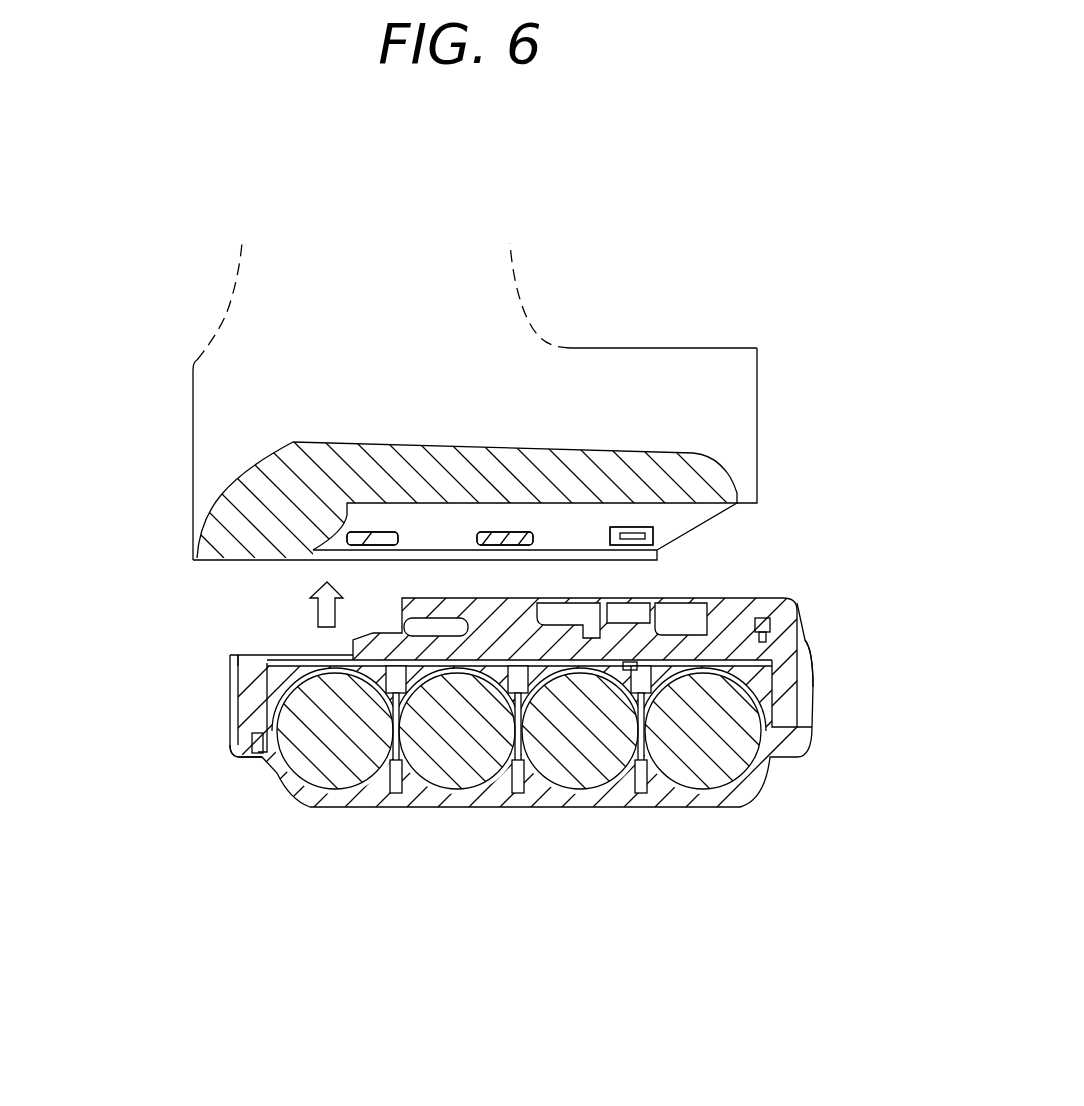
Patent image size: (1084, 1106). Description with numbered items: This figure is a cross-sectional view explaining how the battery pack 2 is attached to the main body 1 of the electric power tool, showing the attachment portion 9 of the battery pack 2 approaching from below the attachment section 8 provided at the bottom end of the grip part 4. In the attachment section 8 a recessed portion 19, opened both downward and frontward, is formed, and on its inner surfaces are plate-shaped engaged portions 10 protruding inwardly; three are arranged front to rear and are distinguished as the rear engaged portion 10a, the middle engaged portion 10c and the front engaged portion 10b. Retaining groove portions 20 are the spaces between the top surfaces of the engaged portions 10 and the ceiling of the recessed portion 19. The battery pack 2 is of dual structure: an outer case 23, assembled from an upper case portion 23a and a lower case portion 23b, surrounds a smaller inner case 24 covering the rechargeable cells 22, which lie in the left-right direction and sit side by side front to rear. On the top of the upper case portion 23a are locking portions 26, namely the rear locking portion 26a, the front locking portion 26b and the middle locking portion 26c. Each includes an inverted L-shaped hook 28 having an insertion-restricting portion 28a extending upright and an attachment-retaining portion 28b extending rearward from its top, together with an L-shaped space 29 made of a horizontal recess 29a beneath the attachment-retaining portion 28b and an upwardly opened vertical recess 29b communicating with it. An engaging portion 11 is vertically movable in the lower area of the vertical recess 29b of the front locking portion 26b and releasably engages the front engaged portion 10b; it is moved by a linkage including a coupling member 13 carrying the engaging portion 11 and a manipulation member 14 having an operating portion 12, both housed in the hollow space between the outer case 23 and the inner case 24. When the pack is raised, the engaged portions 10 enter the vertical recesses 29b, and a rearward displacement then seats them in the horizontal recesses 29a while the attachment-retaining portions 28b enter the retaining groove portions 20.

The main body 1 is at (227, 312).
The battery pack 2 is at (500, 753).
The grip part 4 is at (237, 378).
The attachment section 8 is at (227, 565).
The attachment portion 9 is at (583, 598).
The engaged portions 10 is at (525, 376).
The rear engaged portion 10a is at (373, 535).
The front engaged portion 10b is at (649, 401).
The middle engaged portion 10c is at (507, 536).
The engaging portion 11 is at (620, 612).
The operating portion 12 is at (818, 713).
The coupling member 13 is at (772, 637).
The manipulation member 14 is at (823, 672).
The recessed portion 19 is at (448, 527).
The retaining groove portions 20 is at (362, 512).
The rechargeable cells 22 is at (317, 730).
The outer case 23 is at (167, 795).
The upper case portion 23a is at (247, 722).
The lower case portion 23b is at (240, 753).
The inner case 24 is at (278, 693).
The locking portions 26 is at (598, 772).
The rear locking portion 26a is at (416, 620).
The front locking portion 26b is at (695, 599).
The middle locking portion 26c is at (552, 958).
The inverted L-shaped hook 28 is at (529, 785).
The insertion-restricting portion 28a is at (458, 633).
The attachment-retaining portion 28b is at (419, 620).
The L-shaped space 29 is at (646, 785).
The horizontal recess 29a is at (730, 643).
The vertical recess 29b is at (680, 627).